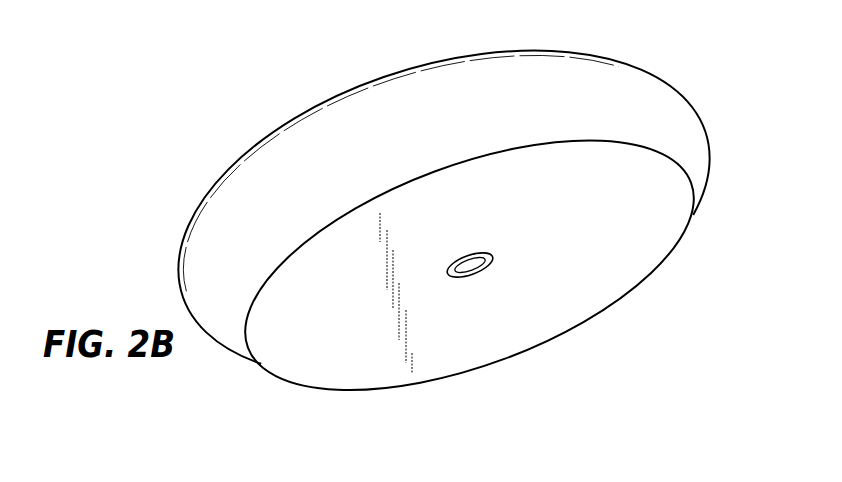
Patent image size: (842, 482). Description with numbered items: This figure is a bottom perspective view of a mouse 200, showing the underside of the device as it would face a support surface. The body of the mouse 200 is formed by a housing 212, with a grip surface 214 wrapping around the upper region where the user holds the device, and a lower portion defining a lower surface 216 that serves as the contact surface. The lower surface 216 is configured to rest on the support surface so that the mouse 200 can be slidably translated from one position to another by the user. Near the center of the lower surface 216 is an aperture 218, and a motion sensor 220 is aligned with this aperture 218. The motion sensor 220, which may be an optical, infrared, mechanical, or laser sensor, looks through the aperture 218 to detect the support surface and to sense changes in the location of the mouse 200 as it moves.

The mouse 200 is at (680, 42).
The housing 212 is at (613, 78).
The grip surface 214 is at (310, 110).
The lower surface 216 is at (637, 260).
The aperture 218 is at (500, 264).
The motion sensor 220 is at (457, 270).